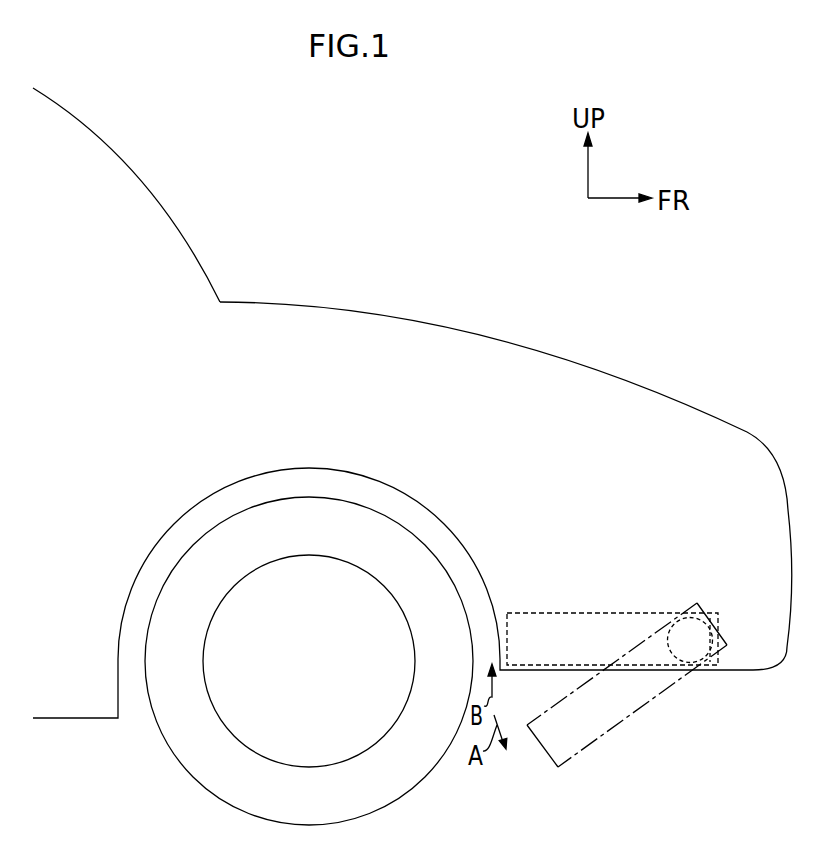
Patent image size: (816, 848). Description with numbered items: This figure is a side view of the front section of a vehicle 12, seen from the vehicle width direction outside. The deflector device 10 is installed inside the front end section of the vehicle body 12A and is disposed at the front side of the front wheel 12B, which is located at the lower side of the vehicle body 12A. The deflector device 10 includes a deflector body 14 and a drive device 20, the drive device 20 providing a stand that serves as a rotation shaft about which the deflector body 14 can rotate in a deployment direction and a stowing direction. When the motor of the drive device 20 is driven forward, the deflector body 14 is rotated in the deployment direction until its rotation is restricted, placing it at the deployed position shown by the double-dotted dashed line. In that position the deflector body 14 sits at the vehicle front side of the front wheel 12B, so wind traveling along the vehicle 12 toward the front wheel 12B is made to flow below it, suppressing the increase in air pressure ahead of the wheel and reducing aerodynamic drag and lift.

The deflector device 10 is at (568, 613).
The vehicle 12 is at (285, 183).
The vehicle body 12A is at (417, 320).
The front wheel 12B is at (170, 750).
The deflector body 14 is at (603, 613).
The drive device 20 is at (707, 617).